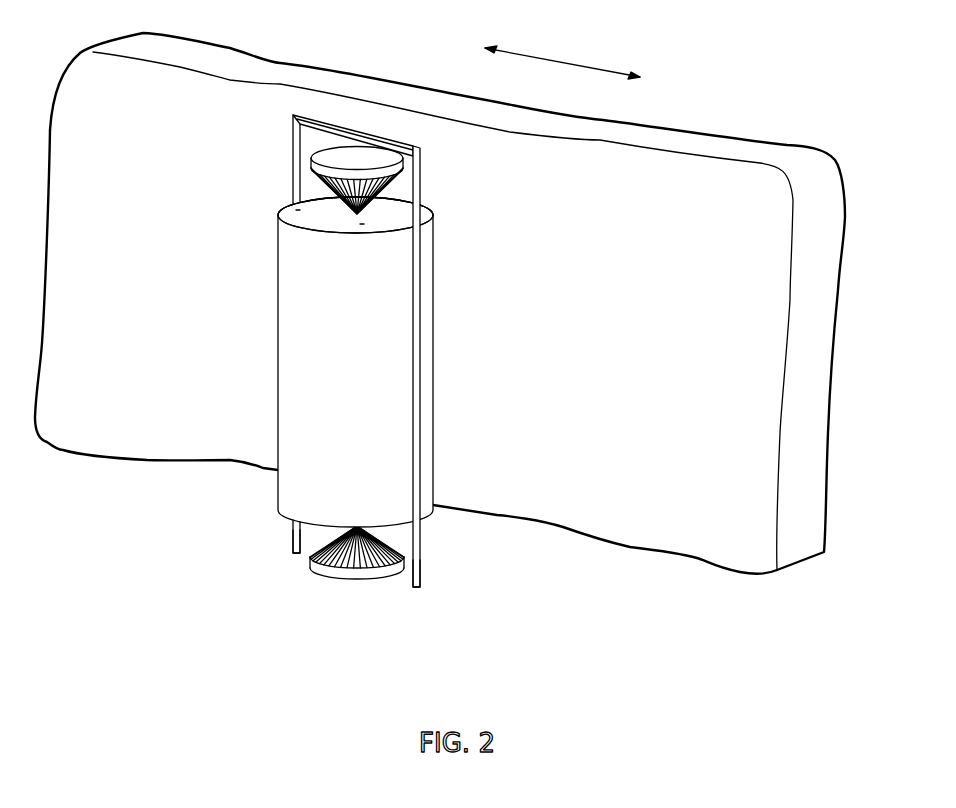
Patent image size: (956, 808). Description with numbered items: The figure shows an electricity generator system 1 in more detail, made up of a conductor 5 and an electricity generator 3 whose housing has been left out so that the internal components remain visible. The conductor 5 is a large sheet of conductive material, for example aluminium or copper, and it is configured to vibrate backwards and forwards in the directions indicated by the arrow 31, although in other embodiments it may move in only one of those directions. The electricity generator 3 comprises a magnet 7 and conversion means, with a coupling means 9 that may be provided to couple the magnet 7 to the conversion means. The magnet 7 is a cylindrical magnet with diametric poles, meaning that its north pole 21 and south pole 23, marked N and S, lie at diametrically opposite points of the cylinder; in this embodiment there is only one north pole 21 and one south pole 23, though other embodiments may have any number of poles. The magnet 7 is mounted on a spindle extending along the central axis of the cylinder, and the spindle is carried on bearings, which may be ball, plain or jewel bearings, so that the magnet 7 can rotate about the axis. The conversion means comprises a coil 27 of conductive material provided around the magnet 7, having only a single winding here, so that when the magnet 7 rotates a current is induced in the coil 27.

The electricity generator system 1 is at (298, 626).
The electricity generator 3 is at (269, 551).
The conductor 5 is at (773, 330).
The magnet 7 is at (277, 493).
The coupling means 9 is at (423, 553).
The north pole 21 is at (318, 212).
The south pole 23 is at (427, 218).
The coil 27 is at (421, 578).
The arrow 31 is at (562, 62).
The north pole N is at (296, 209).
The south pole S is at (362, 225).